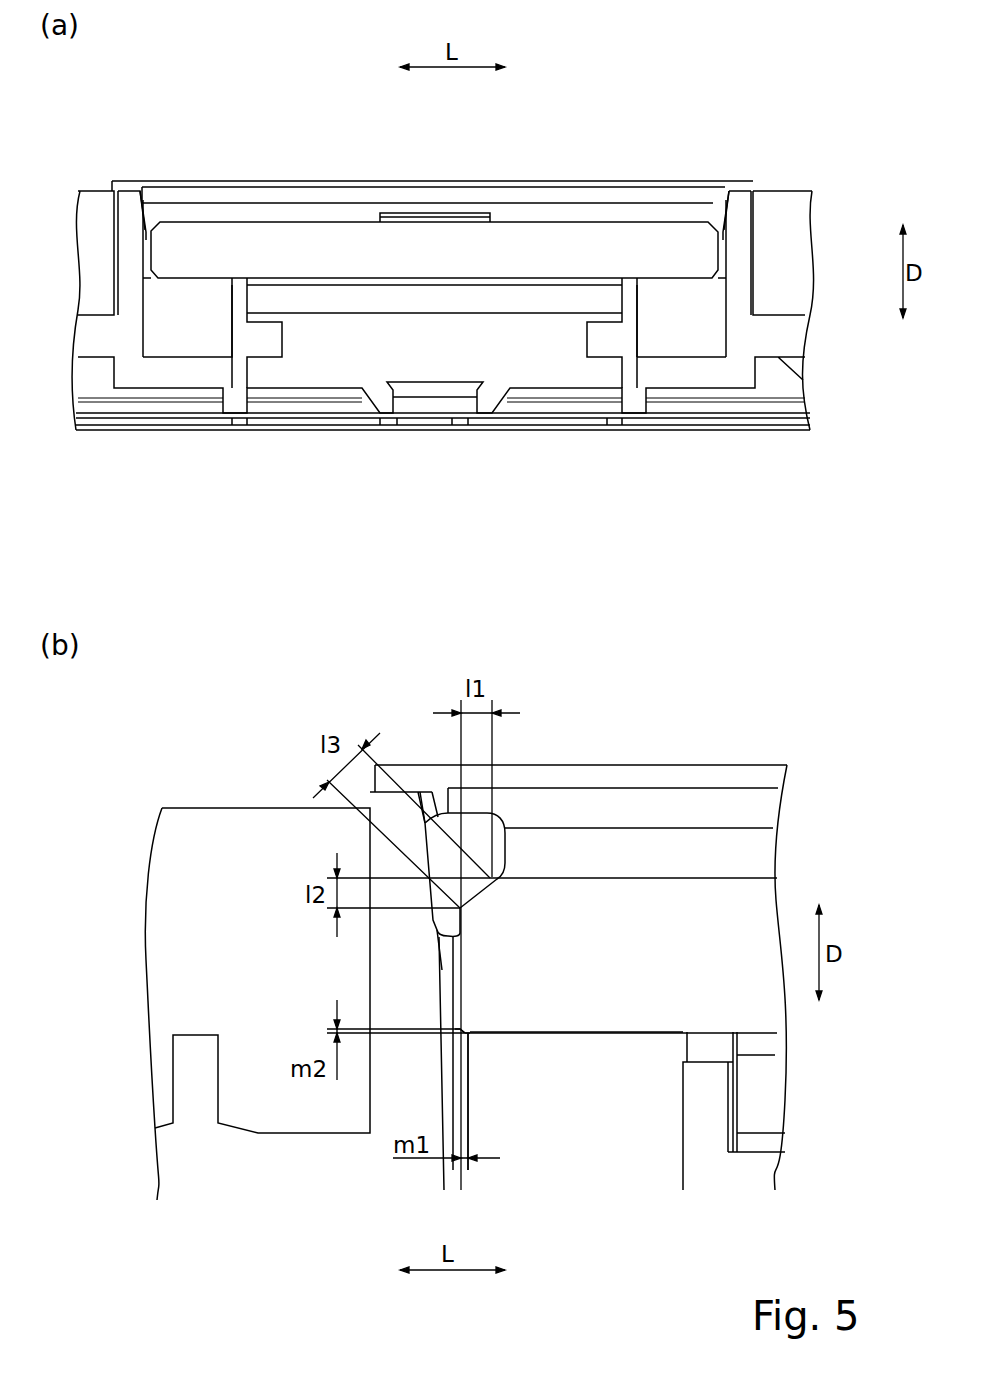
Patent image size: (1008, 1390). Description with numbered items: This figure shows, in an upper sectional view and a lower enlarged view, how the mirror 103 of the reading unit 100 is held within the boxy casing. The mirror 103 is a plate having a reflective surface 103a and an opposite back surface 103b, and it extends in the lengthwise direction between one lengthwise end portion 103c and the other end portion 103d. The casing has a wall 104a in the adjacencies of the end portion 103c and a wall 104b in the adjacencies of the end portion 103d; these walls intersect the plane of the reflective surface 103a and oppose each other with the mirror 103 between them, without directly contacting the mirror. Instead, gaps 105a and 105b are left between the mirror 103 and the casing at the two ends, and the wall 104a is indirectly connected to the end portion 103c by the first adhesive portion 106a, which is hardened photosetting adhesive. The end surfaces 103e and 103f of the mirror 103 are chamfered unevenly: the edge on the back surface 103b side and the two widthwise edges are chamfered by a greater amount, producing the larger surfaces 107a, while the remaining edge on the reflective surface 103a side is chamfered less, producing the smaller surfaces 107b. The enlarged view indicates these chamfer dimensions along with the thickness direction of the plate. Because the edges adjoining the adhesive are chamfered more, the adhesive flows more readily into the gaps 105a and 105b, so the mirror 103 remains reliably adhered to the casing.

The reading unit 100 is at (610, 115).
The mirror 103 is at (445, 237).
The reflective surface 103a is at (550, 285).
The back surface 103b is at (302, 205).
The lengthwise end portion 103c is at (170, 292).
The other end portion 103d is at (708, 292).
The end surface 103e is at (143, 258).
The end surface 103f is at (724, 258).
The wall 104a is at (119, 190).
The wall 104b is at (748, 190).
The gap 105a is at (160, 210).
The gap 105b is at (708, 210).
The first adhesive portion 106a is at (505, 845).
The chamfered surface 107a is at (146, 228).
The chamfered surface 107b is at (148, 280).